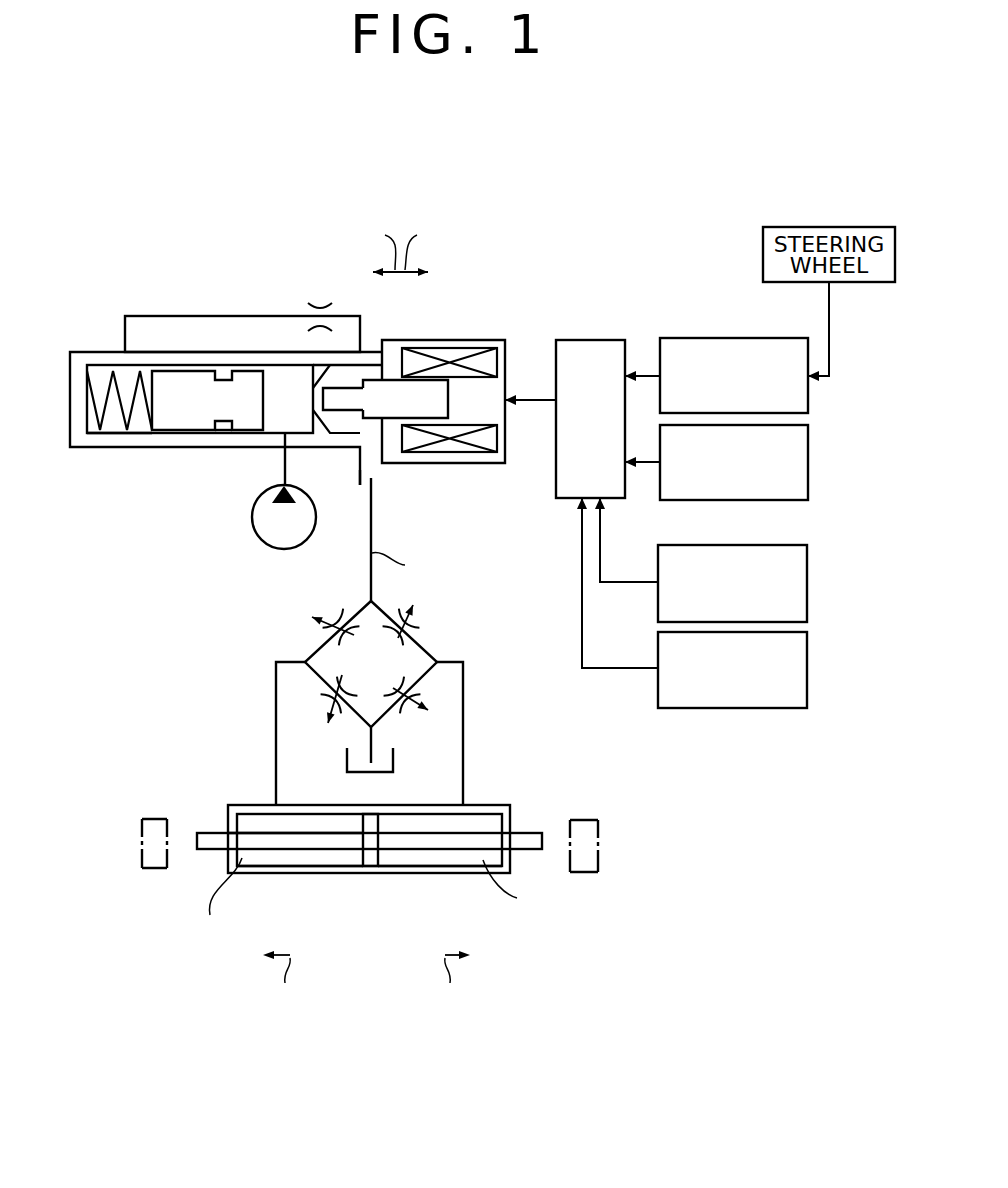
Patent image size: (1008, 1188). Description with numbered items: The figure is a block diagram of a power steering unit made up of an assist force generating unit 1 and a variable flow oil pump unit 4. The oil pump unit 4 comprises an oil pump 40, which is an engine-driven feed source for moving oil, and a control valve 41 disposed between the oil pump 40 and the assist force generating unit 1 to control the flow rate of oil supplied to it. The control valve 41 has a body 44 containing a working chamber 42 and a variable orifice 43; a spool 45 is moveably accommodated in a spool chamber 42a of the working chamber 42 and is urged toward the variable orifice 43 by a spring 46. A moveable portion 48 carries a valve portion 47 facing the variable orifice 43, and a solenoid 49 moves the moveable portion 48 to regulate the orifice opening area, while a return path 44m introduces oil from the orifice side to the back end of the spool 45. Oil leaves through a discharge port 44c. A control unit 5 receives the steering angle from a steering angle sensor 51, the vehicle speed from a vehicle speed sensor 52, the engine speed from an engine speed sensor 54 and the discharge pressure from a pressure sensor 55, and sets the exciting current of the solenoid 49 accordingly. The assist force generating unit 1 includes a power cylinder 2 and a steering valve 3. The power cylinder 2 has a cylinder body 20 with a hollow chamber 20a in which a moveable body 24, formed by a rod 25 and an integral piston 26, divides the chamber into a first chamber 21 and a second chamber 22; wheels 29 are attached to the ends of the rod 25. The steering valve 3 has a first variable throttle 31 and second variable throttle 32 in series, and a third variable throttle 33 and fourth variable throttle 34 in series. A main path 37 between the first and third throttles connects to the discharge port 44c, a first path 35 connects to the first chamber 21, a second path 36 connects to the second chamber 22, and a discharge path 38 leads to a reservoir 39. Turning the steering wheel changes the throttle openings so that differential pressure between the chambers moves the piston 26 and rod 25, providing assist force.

The assist force generating unit 1 is at (602, 730).
The power cylinder 2 is at (485, 805).
The steering valve 3 is at (430, 655).
The variable flow oil pump unit 4 is at (138, 473).
The control unit 5 is at (590, 340).
The cylinder body 20 is at (460, 873).
The hollow chamber 20a is at (422, 858).
The first chamber 21 is at (302, 860).
The second chamber 22 is at (393, 860).
The moveable body 24 is at (340, 847).
The rod 25 is at (268, 842).
The piston 26 is at (368, 860).
The wheels 29 is at (142, 866).
The first variable throttle 31 is at (330, 615).
The second variable throttle 32 is at (325, 700).
The third variable throttle 33 is at (413, 622).
The fourth variable throttle 34 is at (403, 712).
The first path 35 is at (276, 760).
The second path 36 is at (462, 722).
The main path 37 is at (371, 548).
The discharge path 38 is at (370, 745).
The reservoir 39 is at (345, 757).
The oil pump 40 is at (252, 525).
The control valve 41 is at (400, 340).
The working chamber 42 is at (102, 375).
The spool chamber 42a is at (223, 430).
The variable orifice 43 is at (313, 402).
The body 44 is at (80, 352).
The return path 44m is at (213, 316).
The discharge port 44c is at (376, 478).
The spool 45 is at (190, 392).
The spring 46 is at (118, 417).
The valve portion 47 is at (342, 402).
The moveable portion 48 is at (423, 412).
The solenoid 49 is at (427, 365).
The steering angle sensor 51 is at (735, 338).
The vehicle speed sensor 52 is at (730, 500).
The engine speed sensor 54 is at (808, 585).
The pressure sensor 55 is at (808, 672).